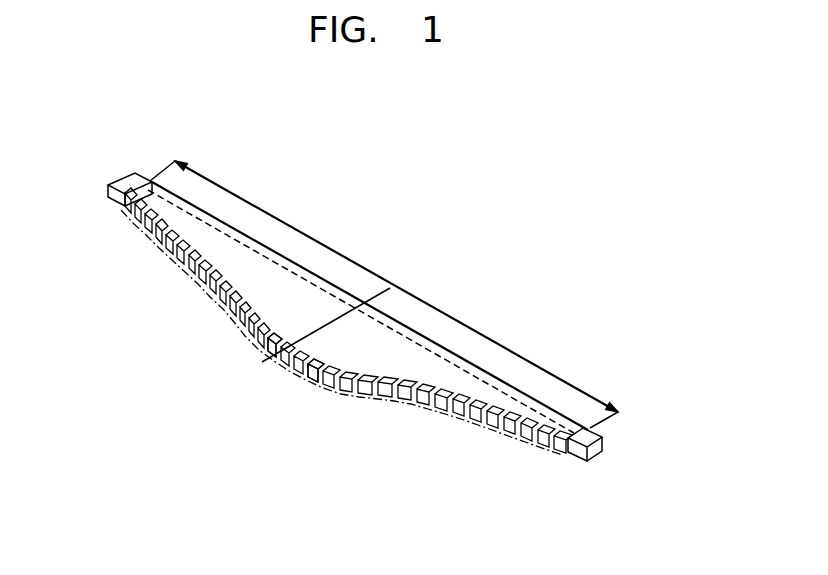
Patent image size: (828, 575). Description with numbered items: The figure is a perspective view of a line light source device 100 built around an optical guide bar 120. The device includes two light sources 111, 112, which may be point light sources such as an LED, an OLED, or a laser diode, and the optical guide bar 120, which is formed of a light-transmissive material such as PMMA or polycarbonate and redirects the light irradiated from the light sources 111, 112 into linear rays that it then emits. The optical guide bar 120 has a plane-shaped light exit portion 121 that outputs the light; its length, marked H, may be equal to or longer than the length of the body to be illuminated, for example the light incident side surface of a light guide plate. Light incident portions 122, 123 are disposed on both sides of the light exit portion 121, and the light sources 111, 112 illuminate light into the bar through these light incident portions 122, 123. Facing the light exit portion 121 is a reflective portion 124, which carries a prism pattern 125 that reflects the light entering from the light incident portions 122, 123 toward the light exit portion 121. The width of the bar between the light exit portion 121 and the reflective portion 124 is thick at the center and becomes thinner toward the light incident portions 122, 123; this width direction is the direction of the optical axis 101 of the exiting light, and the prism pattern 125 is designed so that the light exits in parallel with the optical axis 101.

The line light source device 100 is at (692, 382).
The optical axis 101 is at (268, 367).
The light source 111 is at (590, 453).
The light source 112 is at (118, 181).
The optical guide bar 120 is at (124, 247).
The light exit portion 121 is at (189, 208).
The light incident portion 122 is at (576, 436).
The light incident portion 123 is at (150, 186).
The reflective portion 124 is at (223, 307).
The prism pattern 125 is at (322, 374).